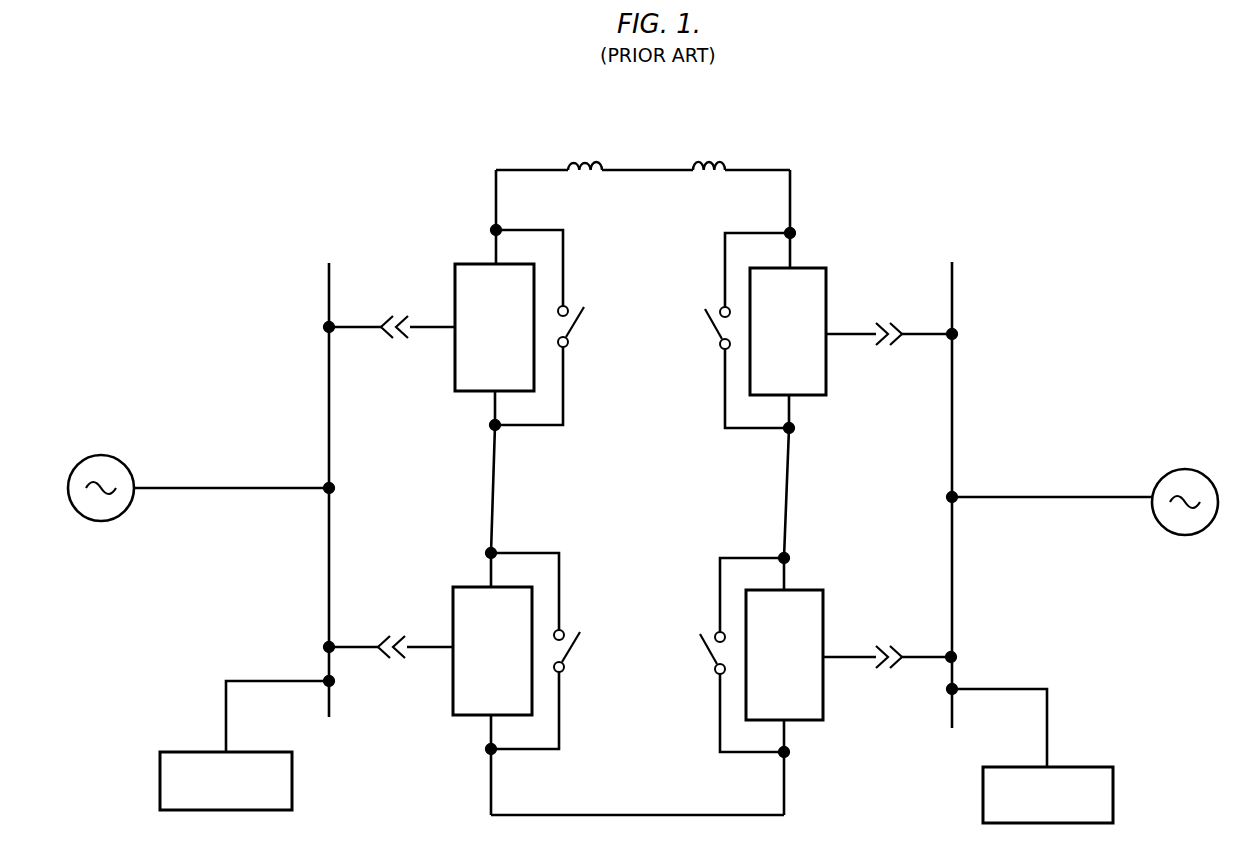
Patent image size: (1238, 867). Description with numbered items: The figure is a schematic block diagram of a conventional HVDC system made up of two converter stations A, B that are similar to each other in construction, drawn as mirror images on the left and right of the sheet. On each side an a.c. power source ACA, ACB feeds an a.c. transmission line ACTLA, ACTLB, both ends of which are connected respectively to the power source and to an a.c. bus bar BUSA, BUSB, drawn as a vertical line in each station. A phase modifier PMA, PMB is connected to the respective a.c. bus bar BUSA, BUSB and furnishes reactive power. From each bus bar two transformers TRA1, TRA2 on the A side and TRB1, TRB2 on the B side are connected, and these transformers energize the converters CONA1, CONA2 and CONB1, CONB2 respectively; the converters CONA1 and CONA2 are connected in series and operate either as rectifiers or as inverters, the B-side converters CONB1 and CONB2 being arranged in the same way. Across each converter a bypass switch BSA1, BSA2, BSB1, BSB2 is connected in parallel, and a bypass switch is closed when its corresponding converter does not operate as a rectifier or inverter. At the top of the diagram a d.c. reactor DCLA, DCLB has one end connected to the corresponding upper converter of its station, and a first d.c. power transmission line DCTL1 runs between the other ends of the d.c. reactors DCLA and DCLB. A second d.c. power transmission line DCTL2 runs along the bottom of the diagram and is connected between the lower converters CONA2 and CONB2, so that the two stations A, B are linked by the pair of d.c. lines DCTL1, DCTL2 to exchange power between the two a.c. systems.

The converter station A is at (340, 197).
The converter station B is at (954, 197).
The a.c. power source ACA is at (94, 456).
The a.c. power source ACB is at (1185, 469).
The a.c. transmission line ACTLA is at (234, 508).
The a.c. transmission line ACTLB is at (1050, 515).
The a.c. bus bar BUSA is at (329, 430).
The a.c. bus bar BUSB is at (952, 433).
The transformer TRA1 is at (390, 310).
The transformer TRA2 is at (389, 631).
The transformer TRB1 is at (892, 316).
The transformer TRB2 is at (890, 638).
The converter CONA1 is at (494, 327).
The converter CONA2 is at (492, 651).
The converter CONB1 is at (788, 331).
The converter CONB2 is at (784, 655).
The bypass switch BSA1 is at (555, 328).
The bypass switch BSA2 is at (549, 651).
The bypass switch BSB1 is at (731, 331).
The bypass switch BSB2 is at (722, 655).
The d.c. reactor DCLA is at (567, 170).
The d.c. reactor DCLB is at (723, 170).
The d.c. power transmission line DCTL1 is at (653, 170).
The d.c. power transmission line DCTL2 is at (627, 815).
The phase modifier PMA is at (247, 743).
The phase modifier PMB is at (1030, 754).